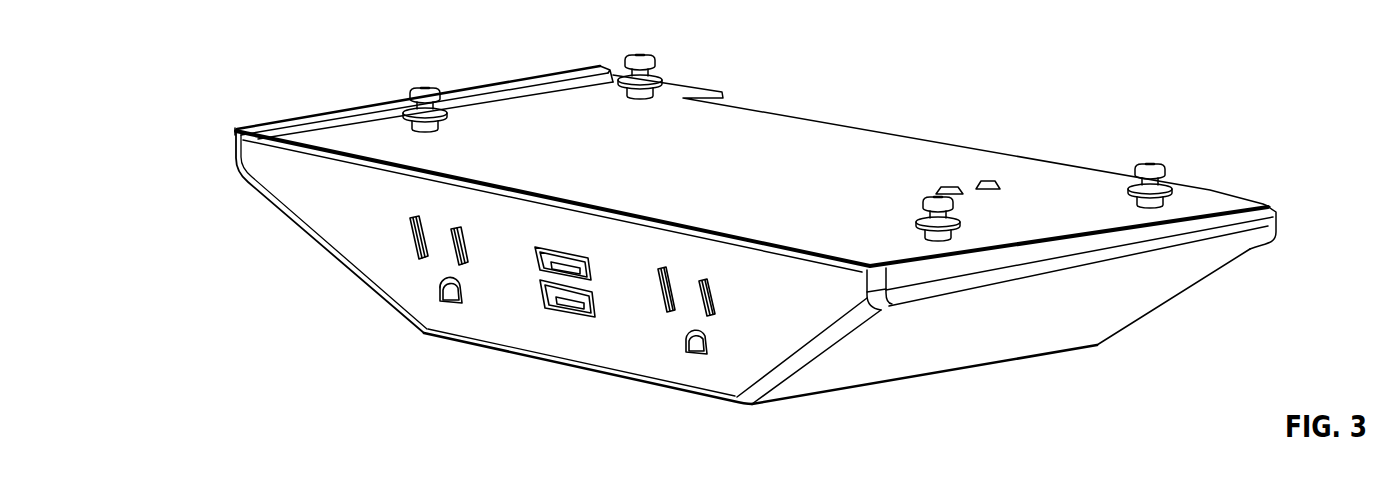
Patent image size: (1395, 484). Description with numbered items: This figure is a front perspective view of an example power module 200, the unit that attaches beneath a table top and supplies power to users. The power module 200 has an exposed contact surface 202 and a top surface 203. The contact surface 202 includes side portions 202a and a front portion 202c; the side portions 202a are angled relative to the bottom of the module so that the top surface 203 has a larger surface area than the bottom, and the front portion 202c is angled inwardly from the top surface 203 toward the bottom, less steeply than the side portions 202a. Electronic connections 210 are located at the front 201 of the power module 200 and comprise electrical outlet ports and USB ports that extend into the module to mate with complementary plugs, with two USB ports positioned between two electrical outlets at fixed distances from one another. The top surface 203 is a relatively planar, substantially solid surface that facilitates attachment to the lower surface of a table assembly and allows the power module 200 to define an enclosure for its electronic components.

The power module 200 is at (211, 55).
The front 201 is at (506, 302).
The exposed contact surface 202 is at (1280, 204).
The side portions 202a is at (1017, 338).
The front portion 202c is at (727, 357).
The top surface 203 is at (813, 140).
The electronic connections 210 is at (453, 246).